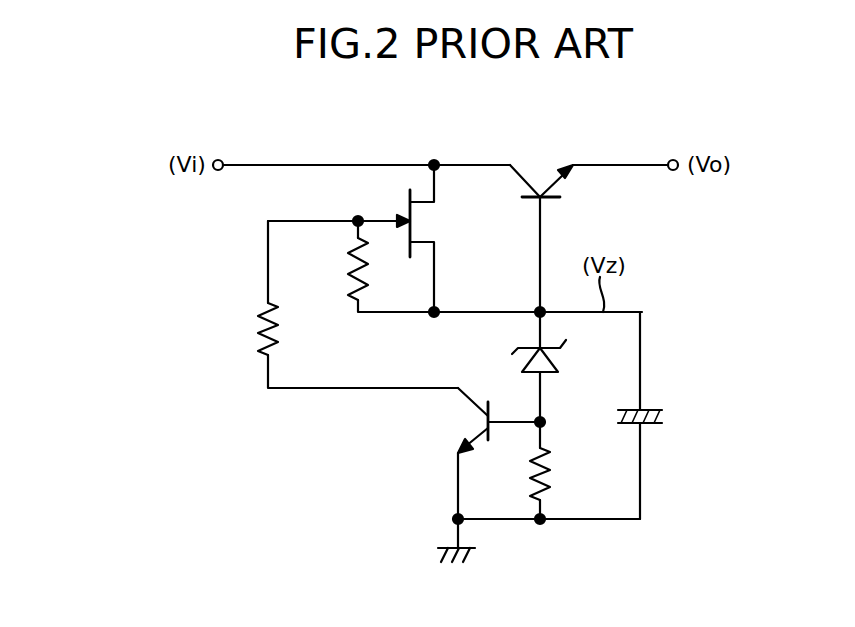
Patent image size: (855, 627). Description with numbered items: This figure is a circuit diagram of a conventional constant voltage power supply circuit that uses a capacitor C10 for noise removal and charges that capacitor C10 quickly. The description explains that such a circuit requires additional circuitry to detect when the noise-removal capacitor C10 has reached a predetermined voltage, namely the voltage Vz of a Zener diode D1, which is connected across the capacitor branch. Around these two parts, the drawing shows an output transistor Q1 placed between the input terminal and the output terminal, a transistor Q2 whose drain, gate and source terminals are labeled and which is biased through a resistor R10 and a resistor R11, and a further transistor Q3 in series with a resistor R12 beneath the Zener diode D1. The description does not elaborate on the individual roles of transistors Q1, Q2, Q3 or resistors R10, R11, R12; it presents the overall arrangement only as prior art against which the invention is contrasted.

The output transistor Q1 is at (541, 168).
The MOS transistor Q2 is at (415, 238).
The transistor Q3 is at (482, 420).
The resistor R10 is at (365, 266).
The resistor R11 is at (358, 304).
The resistor R12 is at (566, 470).
The Zener diode D1 is at (555, 367).
The capacitor C10 is at (664, 415).